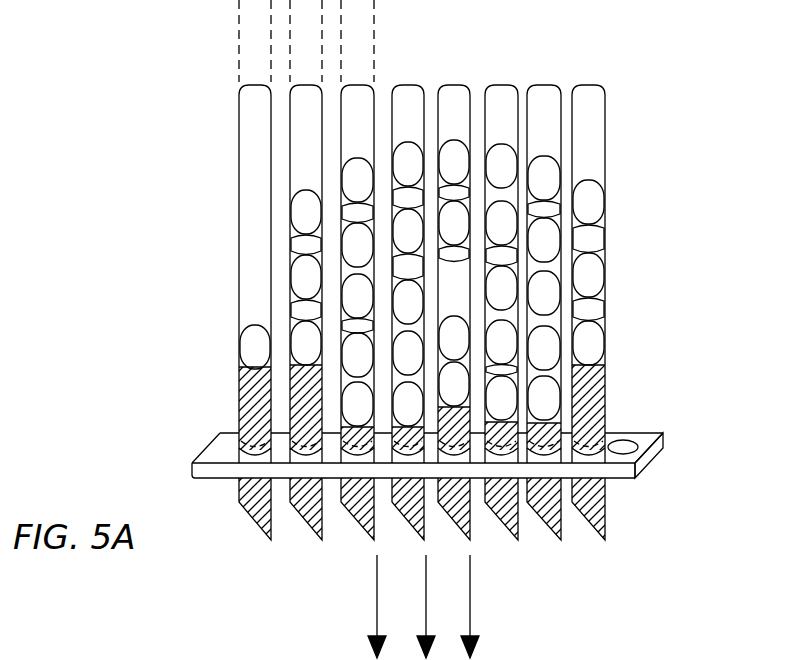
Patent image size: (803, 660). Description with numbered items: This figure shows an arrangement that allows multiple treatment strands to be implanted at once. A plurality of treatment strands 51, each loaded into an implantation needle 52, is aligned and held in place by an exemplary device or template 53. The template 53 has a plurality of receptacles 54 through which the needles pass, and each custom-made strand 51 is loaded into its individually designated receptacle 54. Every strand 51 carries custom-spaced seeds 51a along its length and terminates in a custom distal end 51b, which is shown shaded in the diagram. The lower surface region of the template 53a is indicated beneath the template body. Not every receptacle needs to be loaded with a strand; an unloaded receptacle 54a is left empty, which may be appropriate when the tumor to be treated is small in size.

The treatment strand 51 is at (342, 139).
The custom-spaced seeds 51a is at (305, 280).
The custom distal end 51b is at (298, 425).
The implantation needle 52 is at (244, 48).
The template 53 is at (207, 452).
The bottom surface of holding plate 53a is at (240, 474).
The receptacles 54 is at (558, 458).
The unloaded receptacle 54a is at (636, 433).